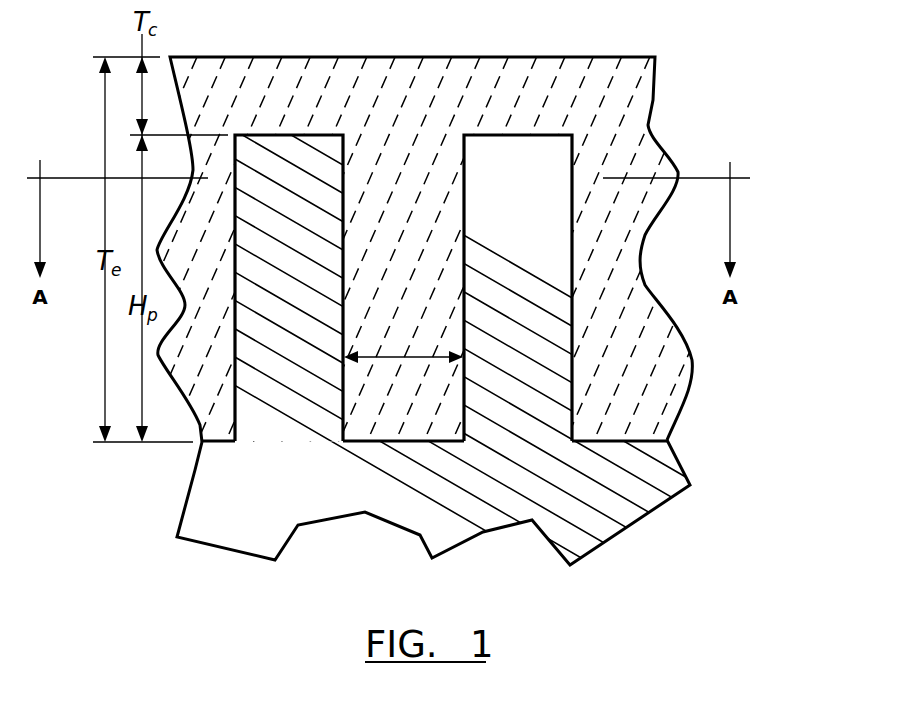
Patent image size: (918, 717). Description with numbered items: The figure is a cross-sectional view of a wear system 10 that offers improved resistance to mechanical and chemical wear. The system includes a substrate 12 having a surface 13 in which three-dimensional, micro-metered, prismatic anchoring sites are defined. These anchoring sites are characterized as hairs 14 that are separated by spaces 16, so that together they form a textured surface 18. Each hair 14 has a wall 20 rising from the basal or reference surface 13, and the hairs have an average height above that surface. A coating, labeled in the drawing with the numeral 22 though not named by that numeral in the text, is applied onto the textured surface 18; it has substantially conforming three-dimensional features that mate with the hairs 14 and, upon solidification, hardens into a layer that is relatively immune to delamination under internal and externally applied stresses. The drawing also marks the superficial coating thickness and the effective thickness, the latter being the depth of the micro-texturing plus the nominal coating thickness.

The wear system 10 is at (603, 28).
The substrate 12 is at (215, 523).
The surface 13 is at (624, 441).
The hairs 14 is at (518, 415).
The spaces 16 is at (400, 356).
The textured surface 18 is at (693, 474).
The wall 20 is at (344, 222).
The outer coating surface 22 is at (288, 134).